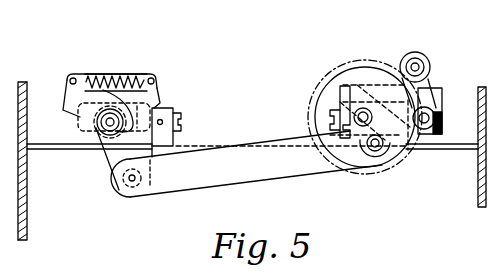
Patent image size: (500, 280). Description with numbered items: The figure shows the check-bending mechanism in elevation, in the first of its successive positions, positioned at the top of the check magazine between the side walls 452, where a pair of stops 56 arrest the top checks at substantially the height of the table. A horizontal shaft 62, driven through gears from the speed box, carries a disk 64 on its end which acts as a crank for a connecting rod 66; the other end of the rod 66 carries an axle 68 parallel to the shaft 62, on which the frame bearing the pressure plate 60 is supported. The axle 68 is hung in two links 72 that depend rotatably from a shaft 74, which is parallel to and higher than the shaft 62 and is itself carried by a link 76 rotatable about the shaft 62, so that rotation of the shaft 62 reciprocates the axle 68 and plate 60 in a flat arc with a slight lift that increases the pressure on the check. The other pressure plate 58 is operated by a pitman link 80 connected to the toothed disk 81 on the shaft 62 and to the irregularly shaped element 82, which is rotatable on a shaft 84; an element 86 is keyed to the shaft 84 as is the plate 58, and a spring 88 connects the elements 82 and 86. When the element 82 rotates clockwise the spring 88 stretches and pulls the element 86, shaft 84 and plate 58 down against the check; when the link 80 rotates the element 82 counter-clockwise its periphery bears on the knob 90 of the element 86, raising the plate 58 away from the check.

The side walls 452 is at (27, 225).
The stops 56 is at (60, 147).
The pressure plate 58 is at (181, 140).
The pressure plate 60 is at (336, 135).
The horizontal shaft 62 is at (361, 110).
The disk 64 is at (368, 152).
The connecting rod 66 is at (432, 102).
The axle 68 is at (436, 116).
The links 72 is at (427, 82).
The shaft 74 is at (415, 62).
The link 76 is at (394, 68).
The pitman link 80 is at (246, 164).
The toothed disk 81 is at (317, 96).
The irregularly shaped element 82 is at (157, 100).
The shaft 84 is at (105, 130).
The element 86 is at (68, 108).
The spring 88 is at (131, 78).
The knob 90 is at (99, 80).